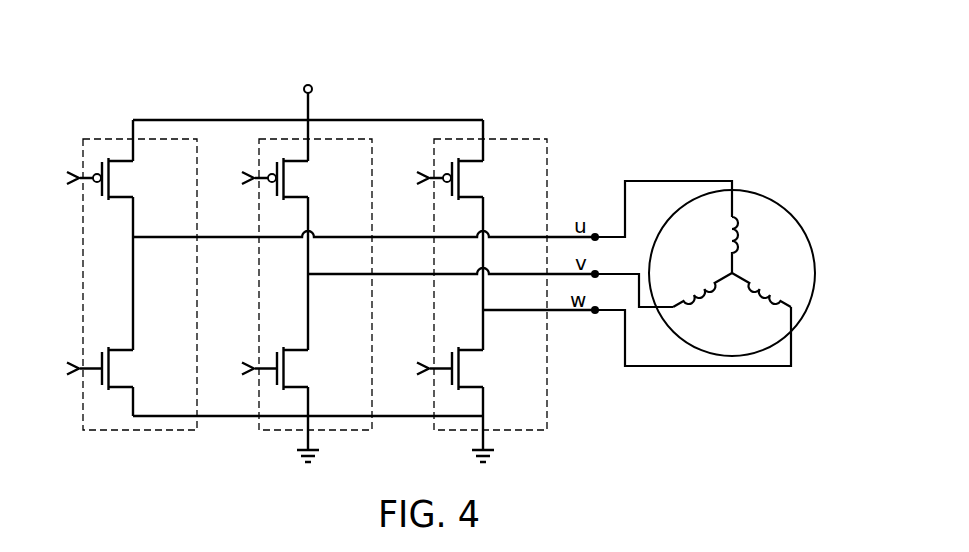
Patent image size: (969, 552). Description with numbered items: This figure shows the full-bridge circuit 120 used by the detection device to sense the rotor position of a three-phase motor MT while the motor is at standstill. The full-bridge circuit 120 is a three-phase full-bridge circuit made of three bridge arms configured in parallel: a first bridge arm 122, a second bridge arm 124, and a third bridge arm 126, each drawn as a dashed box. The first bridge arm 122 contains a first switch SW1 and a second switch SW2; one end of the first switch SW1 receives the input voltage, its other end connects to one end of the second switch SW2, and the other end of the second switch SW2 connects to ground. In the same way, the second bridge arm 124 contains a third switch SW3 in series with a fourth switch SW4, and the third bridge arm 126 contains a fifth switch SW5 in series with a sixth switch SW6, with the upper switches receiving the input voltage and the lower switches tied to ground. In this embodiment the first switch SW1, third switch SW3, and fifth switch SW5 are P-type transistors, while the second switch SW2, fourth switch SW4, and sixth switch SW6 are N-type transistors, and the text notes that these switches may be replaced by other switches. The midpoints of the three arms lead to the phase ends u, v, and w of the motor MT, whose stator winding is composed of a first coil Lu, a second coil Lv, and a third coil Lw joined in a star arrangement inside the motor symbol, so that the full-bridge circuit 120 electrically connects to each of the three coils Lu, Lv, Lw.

The full-bridge circuit 120 is at (125, 34).
The first bridge arm 122 is at (112, 137).
The second bridge arm 124 is at (274, 137).
The third bridge arm 126 is at (462, 137).
The first switch SW1 is at (127, 179).
The second switch SW2 is at (127, 368).
The third switch SW3 is at (302, 179).
The fourth switch SW4 is at (302, 368).
The fifth switch SW5 is at (477, 179).
The sixth switch SW6 is at (477, 368).
The three-phase motor MT is at (769, 194).
The first coil Lu is at (751, 245).
The second coil Lv is at (704, 285).
The third coil Lw is at (760, 300).